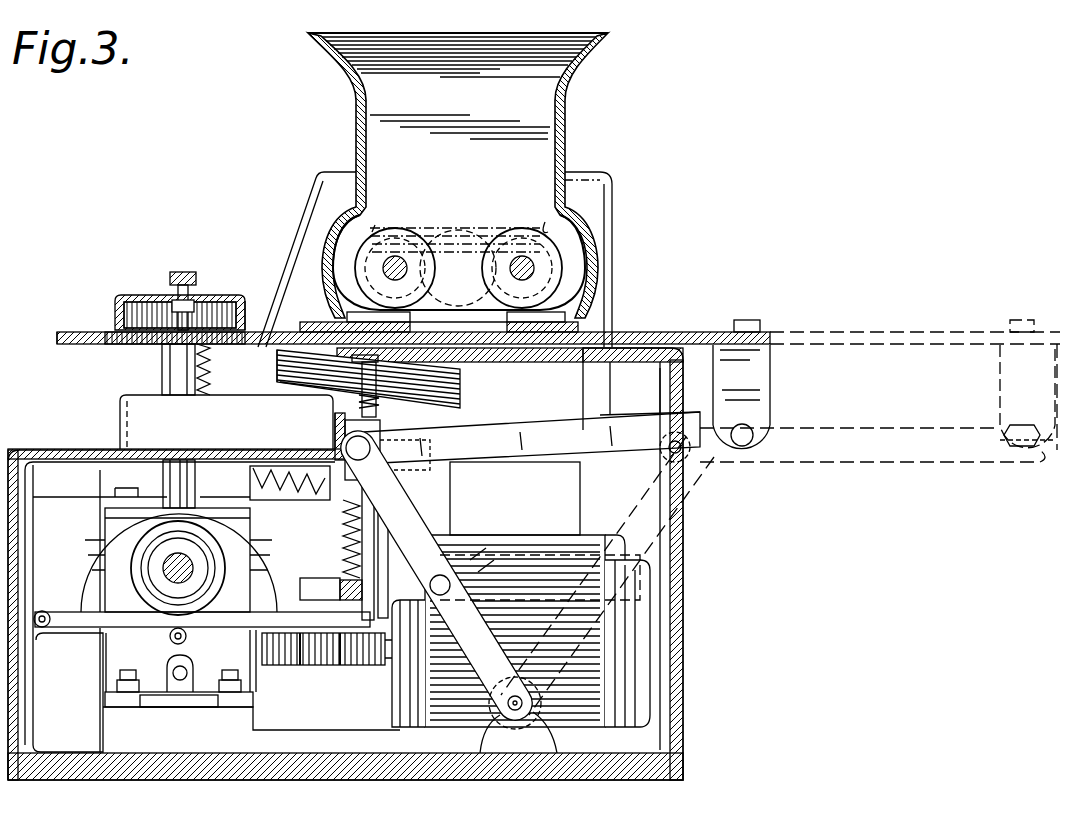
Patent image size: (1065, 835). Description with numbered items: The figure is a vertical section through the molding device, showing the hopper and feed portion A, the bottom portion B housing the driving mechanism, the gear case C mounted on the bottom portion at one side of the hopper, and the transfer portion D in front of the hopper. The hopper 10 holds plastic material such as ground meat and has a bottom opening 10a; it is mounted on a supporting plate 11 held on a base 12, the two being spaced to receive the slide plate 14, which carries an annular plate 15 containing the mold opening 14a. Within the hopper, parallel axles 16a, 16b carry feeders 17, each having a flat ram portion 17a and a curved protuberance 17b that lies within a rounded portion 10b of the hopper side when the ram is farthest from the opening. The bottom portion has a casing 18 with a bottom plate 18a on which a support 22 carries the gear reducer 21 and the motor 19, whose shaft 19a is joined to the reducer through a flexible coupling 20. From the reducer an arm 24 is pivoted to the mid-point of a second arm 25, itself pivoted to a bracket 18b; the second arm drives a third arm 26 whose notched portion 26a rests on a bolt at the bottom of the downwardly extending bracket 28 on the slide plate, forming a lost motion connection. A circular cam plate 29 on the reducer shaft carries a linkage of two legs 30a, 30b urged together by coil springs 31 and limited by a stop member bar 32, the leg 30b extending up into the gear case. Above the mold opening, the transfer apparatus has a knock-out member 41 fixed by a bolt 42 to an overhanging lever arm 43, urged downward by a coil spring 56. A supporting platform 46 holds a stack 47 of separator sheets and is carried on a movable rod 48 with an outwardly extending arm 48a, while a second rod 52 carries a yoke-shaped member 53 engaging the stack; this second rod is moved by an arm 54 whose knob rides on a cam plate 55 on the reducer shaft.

The hopper 10 is at (567, 86).
The hopper and feed portion A is at (558, 142).
The bottom opening 10a is at (412, 327).
The rounded portions 10b is at (322, 218).
The supporting plate 11 is at (318, 322).
The base 12 is at (586, 352).
The slide plate 14 is at (74, 330).
The mold opening 14a is at (118, 342).
The annular plate 15 is at (100, 330).
The rotatable axle 16a is at (397, 262).
The rotatable axle 16b is at (518, 262).
The feeder 17 is at (425, 250).
The ram portion 17a is at (383, 222).
The protuberance 17b is at (348, 262).
The casing 18 is at (682, 572).
The bottom plate 18a is at (660, 768).
The bracket 18b is at (498, 704).
The motor 19 is at (572, 565).
The motor shaft 19a is at (378, 660).
The flexible coupling 20 is at (326, 658).
The gear reducer 21 is at (130, 660).
The support 22 is at (280, 740).
The arm 24 is at (326, 580).
The second arm 25 is at (455, 605).
The third arm 26 is at (616, 420).
The notched portion 26a is at (702, 447).
The downwardly extending bracket 28 is at (760, 394).
The cam plate 29 is at (100, 540).
The leg 30a is at (405, 468).
The leg 30b is at (490, 380).
The coil springs 31 is at (252, 470).
The stop member bar 32 is at (450, 420).
The knock-out member 41 is at (248, 302).
The bolt 42 is at (186, 272).
The lever arm 43 is at (162, 364).
The supporting platform 46 is at (320, 386).
The stack 47 is at (280, 370).
The movable rod 48 is at (343, 518).
The outwardly extending arm 48a is at (318, 586).
The second rod 52 is at (374, 528).
The yoke-shaped member 53 is at (384, 400).
The arm 54 is at (82, 628).
The cam plate 55 is at (165, 548).
The coil spring 56 is at (210, 378).
The bottom portion B is at (682, 626).
The gear case C is at (614, 238).
The transfer portion D is at (122, 296).